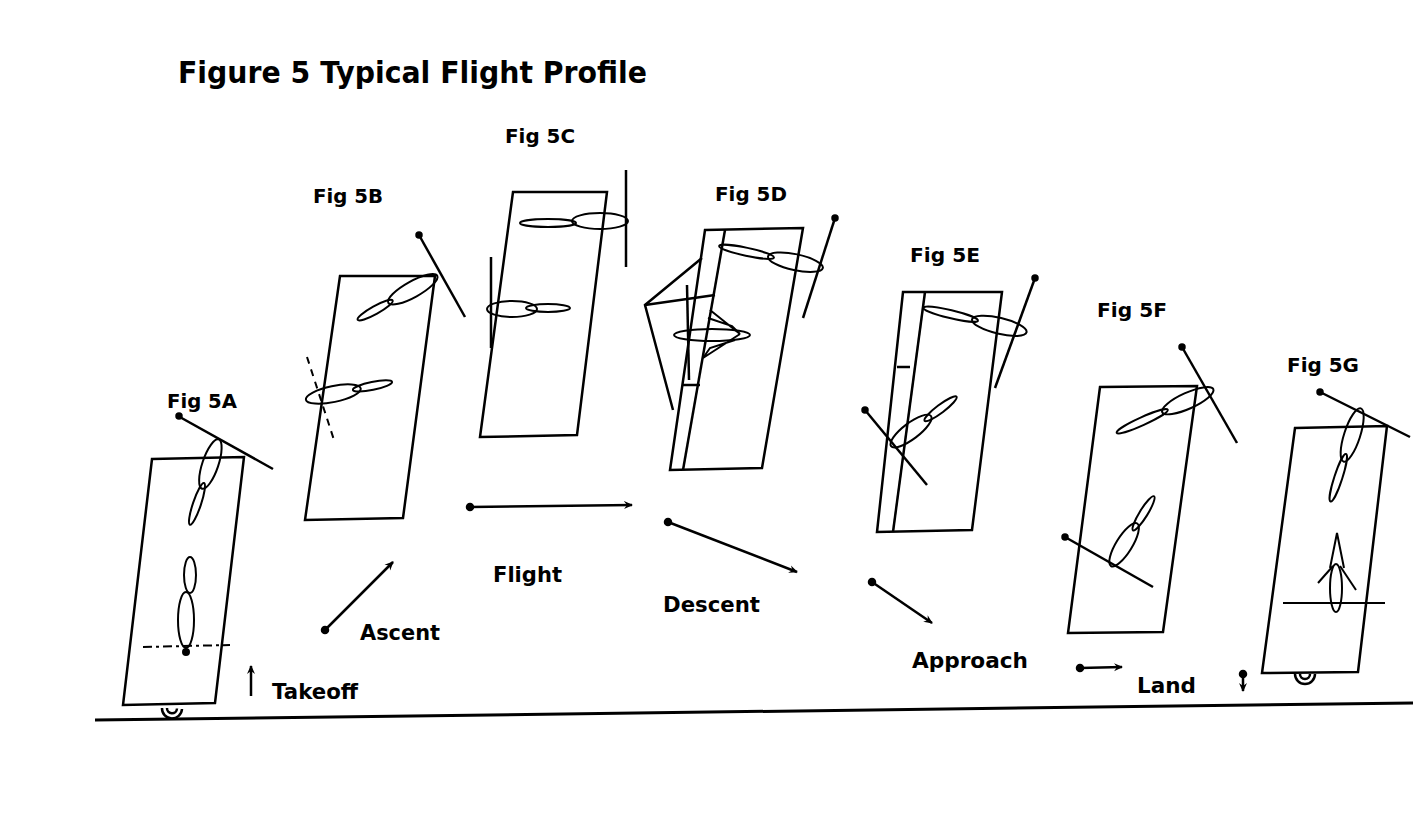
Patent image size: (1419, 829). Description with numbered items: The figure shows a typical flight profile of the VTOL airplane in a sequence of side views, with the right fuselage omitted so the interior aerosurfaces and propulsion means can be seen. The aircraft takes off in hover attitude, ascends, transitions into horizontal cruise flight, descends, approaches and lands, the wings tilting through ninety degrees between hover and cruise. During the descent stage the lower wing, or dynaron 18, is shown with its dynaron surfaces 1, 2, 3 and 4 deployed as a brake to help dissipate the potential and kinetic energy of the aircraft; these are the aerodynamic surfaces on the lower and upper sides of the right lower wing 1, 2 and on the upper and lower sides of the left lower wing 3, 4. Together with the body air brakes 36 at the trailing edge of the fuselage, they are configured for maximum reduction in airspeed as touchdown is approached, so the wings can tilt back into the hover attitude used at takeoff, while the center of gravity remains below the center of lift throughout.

The aerodynamic surface on lower side of right lower wing 1 is at (784, 385).
The aerodynamic surface on upper side of right lower wing 2 is at (802, 316).
The aerodynamic surface on upper side of left lower wing 3 is at (728, 318).
The aerodynamic surface on lower side of left lower wing 4 is at (717, 348).
The lower wing (dynaron) 18 is at (740, 335).
The aerodynamic surfaces of trailing edge of fuselage 36 is at (645, 305).